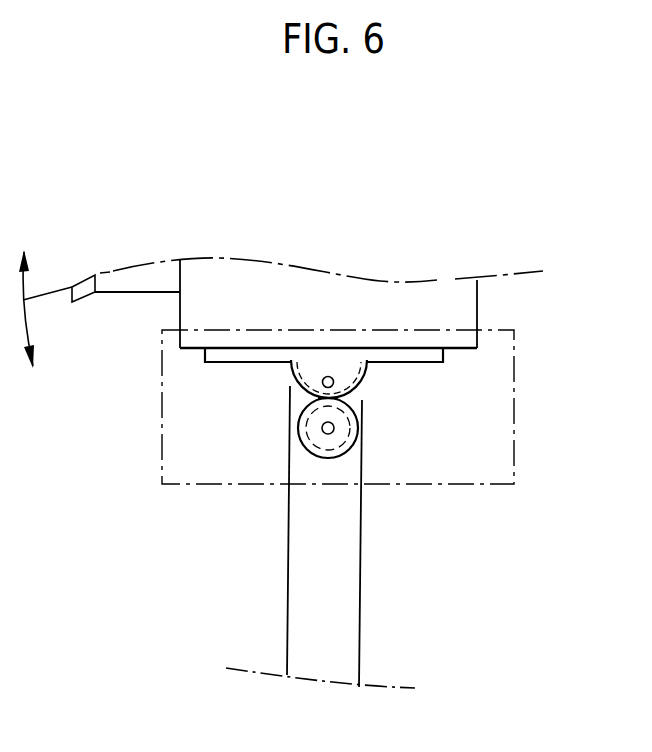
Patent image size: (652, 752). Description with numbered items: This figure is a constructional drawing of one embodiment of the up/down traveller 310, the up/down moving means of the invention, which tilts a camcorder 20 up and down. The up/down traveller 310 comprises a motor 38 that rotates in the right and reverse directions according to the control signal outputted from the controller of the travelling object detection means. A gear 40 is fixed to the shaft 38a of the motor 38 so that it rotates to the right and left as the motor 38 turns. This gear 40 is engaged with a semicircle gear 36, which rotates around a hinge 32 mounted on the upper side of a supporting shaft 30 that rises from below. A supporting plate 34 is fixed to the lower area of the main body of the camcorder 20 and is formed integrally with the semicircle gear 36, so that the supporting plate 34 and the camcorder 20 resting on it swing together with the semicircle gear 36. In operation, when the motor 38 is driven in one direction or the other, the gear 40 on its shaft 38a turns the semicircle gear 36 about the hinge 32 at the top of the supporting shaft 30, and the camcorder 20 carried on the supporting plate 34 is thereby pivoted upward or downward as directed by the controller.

The camcorder 20 is at (352, 293).
The up/down traveller 310 is at (518, 350).
The supporting plate 34 is at (225, 353).
The semicircle gear 36 is at (352, 370).
The hinge 32 is at (323, 388).
The motor 38 is at (360, 410).
The shaft 38a is at (334, 429).
The gear 40 is at (352, 441).
The supporting shaft 30 is at (300, 553).